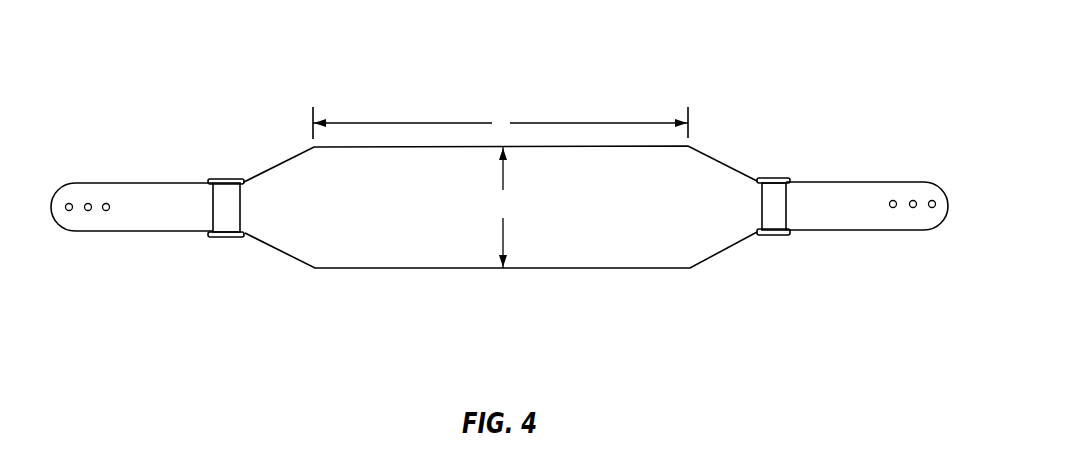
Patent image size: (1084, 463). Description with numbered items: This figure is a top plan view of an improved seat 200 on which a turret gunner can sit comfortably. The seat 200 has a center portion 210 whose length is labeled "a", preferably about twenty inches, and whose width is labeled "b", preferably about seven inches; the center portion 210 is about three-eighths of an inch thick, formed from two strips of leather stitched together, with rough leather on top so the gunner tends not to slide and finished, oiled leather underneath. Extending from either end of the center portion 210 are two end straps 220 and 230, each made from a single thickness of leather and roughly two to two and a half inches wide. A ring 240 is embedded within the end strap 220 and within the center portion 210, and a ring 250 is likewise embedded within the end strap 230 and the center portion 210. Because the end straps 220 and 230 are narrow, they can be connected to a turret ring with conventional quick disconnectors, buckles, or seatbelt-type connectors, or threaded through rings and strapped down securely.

The seat 200 is at (751, 63).
The center portion 210 is at (294, 175).
The end strap 220 is at (128, 181).
The end strap 230 is at (875, 180).
The ring 240 is at (225, 179).
The ring 250 is at (768, 179).